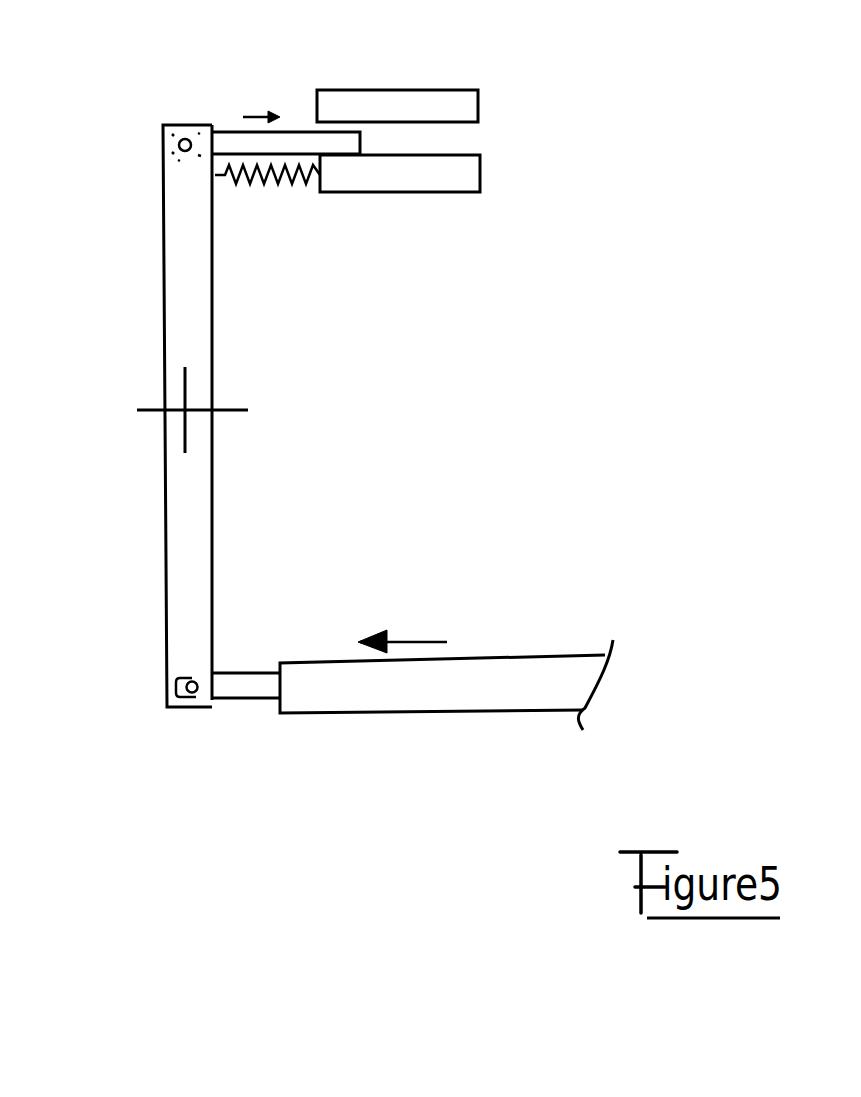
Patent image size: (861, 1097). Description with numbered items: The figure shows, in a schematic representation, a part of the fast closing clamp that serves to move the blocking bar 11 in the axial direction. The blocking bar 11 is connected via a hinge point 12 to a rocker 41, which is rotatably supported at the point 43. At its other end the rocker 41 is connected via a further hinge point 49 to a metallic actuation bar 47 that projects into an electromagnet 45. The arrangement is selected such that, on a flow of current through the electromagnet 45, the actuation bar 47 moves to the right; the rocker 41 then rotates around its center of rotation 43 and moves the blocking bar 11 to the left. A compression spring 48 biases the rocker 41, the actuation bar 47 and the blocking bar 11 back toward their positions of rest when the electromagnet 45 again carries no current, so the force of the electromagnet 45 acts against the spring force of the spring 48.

The blocking bar 11 is at (425, 712).
The hinge point 12 is at (212, 700).
The rocker 41 is at (165, 485).
The point 43 is at (187, 412).
The electromagnet 45 is at (390, 173).
The actuation bar 47 is at (283, 142).
The compression spring 48 is at (268, 178).
The hinge point 49 is at (170, 125).